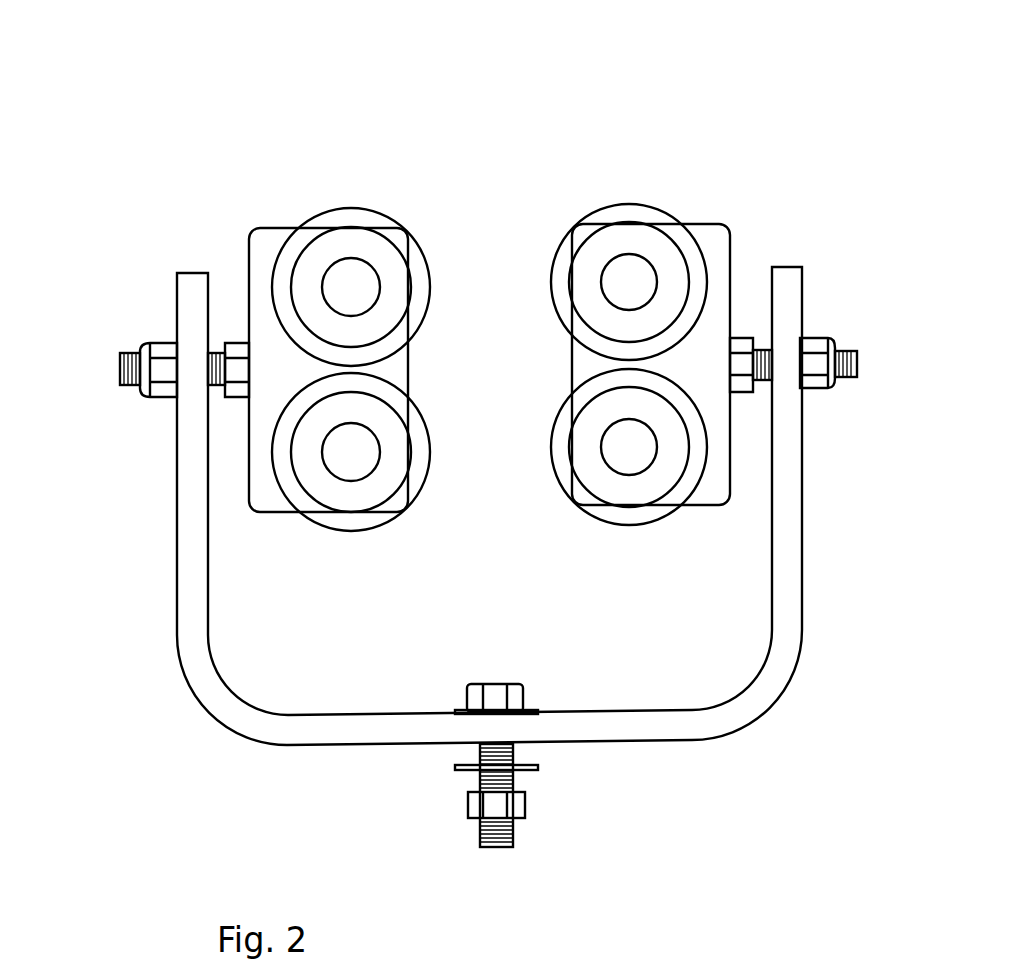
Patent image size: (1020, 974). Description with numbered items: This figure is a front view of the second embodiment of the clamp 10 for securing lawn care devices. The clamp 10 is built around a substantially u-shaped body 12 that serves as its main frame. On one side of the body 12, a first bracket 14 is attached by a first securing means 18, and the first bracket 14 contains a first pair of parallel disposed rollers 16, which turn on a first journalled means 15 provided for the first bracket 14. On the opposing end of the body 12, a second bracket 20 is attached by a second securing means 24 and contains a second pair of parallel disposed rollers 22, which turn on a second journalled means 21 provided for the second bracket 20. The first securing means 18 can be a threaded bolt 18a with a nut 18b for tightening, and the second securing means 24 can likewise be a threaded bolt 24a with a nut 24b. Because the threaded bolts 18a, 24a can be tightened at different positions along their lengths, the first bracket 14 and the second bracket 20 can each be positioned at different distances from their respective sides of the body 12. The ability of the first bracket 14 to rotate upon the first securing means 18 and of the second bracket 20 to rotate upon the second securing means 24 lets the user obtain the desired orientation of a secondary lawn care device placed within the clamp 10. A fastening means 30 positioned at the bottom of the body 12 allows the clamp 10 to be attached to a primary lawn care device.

The clamp 10 is at (489, 428).
The u-shaped body 12 is at (192, 303).
The first bracket 14 is at (700, 305).
The first journalled means 15 is at (631, 264).
The first pair of parallel disposed rollers 16 is at (600, 222).
The first securing means 18 is at (839, 343).
The threaded bolt 18a is at (843, 352).
The nut 18b is at (815, 333).
The second bracket 20 is at (280, 310).
The second journalled means 21 is at (346, 268).
The second pair of parallel disposed rollers 22 is at (379, 222).
The second securing means 24 is at (139, 399).
The threaded bolt 24a is at (127, 354).
The nut 24b is at (150, 397).
The fastening means 30 is at (537, 784).